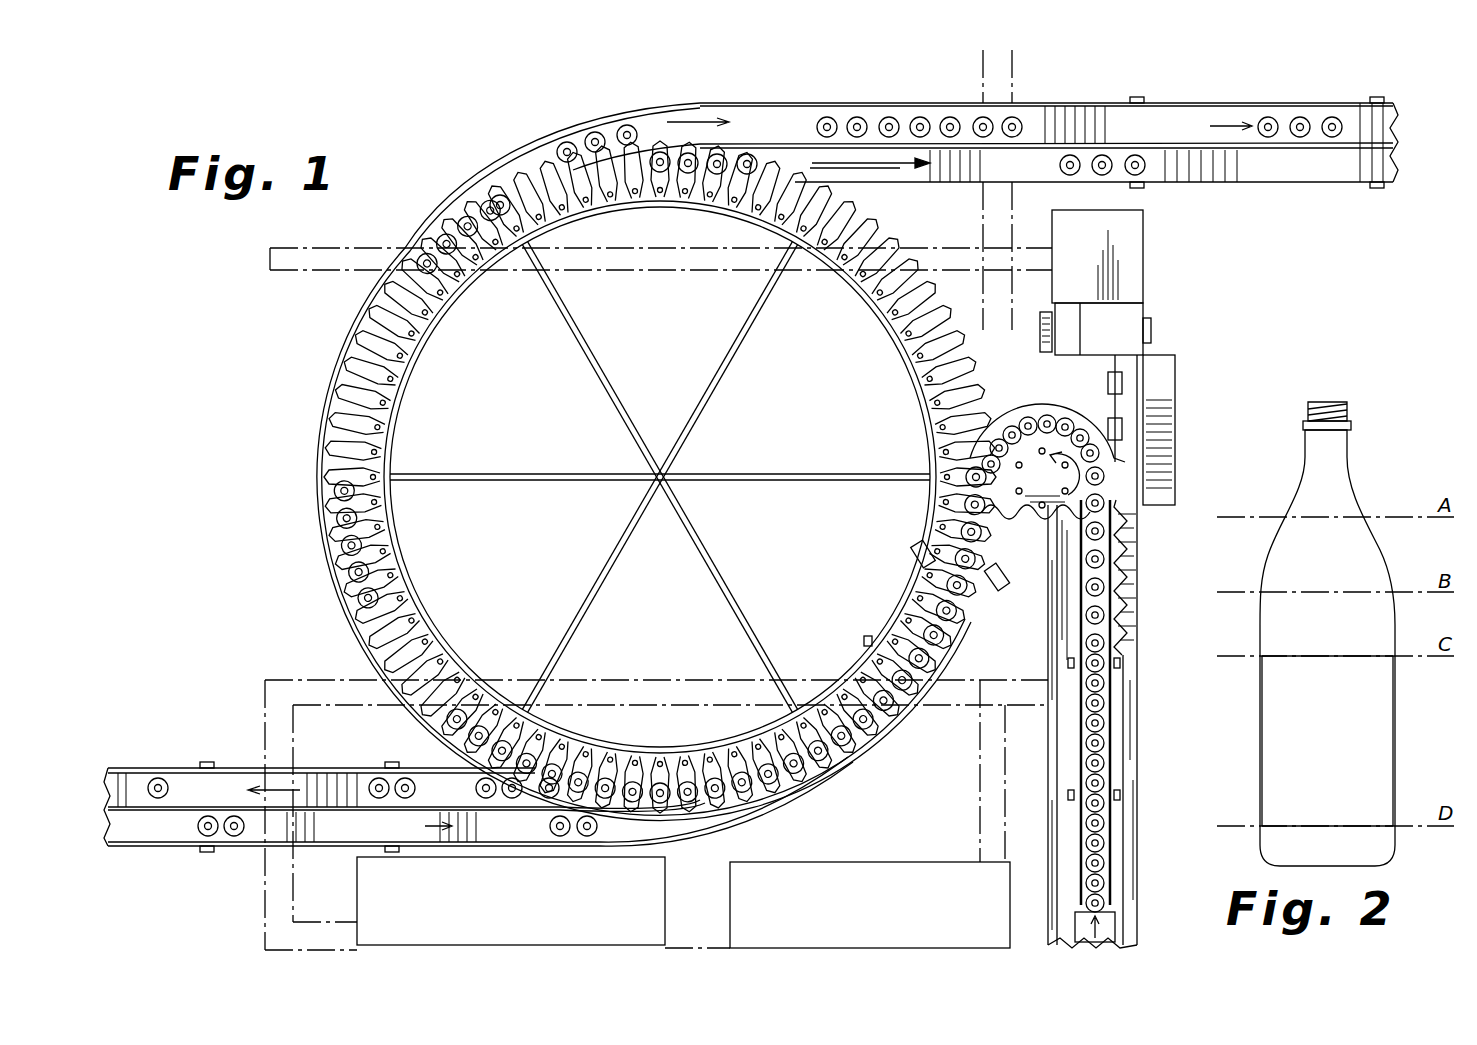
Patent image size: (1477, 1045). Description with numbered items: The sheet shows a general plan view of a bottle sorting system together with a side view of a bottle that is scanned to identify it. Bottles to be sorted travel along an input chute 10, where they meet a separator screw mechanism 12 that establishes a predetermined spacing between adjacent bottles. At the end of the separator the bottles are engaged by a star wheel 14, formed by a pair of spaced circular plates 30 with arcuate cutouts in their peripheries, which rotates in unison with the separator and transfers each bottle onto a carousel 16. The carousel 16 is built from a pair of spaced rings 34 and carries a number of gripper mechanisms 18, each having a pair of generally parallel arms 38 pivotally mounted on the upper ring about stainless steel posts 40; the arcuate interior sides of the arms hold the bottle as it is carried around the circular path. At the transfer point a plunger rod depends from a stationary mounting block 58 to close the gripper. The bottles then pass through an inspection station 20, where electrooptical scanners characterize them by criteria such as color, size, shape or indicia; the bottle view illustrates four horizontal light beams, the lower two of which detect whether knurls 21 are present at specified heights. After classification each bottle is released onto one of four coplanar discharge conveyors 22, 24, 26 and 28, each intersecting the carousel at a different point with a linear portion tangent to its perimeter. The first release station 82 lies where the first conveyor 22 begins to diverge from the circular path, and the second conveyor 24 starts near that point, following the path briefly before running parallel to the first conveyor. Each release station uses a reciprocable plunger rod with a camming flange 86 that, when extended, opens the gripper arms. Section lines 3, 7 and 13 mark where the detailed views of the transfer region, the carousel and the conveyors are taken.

In FIG. 1, the input chute 10 is at (1160, 690).
In FIG. 1, the separator screw mechanism 12 is at (1132, 582).
In FIG. 1, the section line 13 is at (700, 135).
In FIG. 1, the star wheel 14 is at (1032, 438).
In FIG. 1, the carousel 16 is at (893, 355).
In FIG. 1, the gripper mechanisms 18 is at (382, 340).
In FIG. 1, the inspection station 20 is at (915, 556).
In FIG. 2, the knurls 21 is at (1256, 668).
In FIG. 1, the first discharge conveyor 22 is at (188, 830).
In FIG. 1, the second discharge conveyor 24 is at (232, 790).
In FIG. 1, the third discharge conveyor 26 is at (765, 126).
In FIG. 1, the fourth discharge conveyor 28 is at (1025, 165).
In FIG. 1, the circular plates 30 is at (1120, 472).
In FIG. 1, the spaced rings 34 is at (400, 652).
In FIG. 1, the arms 38 is at (898, 266).
In FIG. 1, the stainless steel posts 40 is at (415, 642).
In FIG. 1, the mounting block 58 is at (943, 465).
In FIG. 1, the first release station 82 is at (872, 628).
In FIG. 1, the camming flange 86 is at (542, 146).
In FIG. 1, the section line 3 is at (916, 505).
In FIG. 1, the section line 7 is at (886, 512).